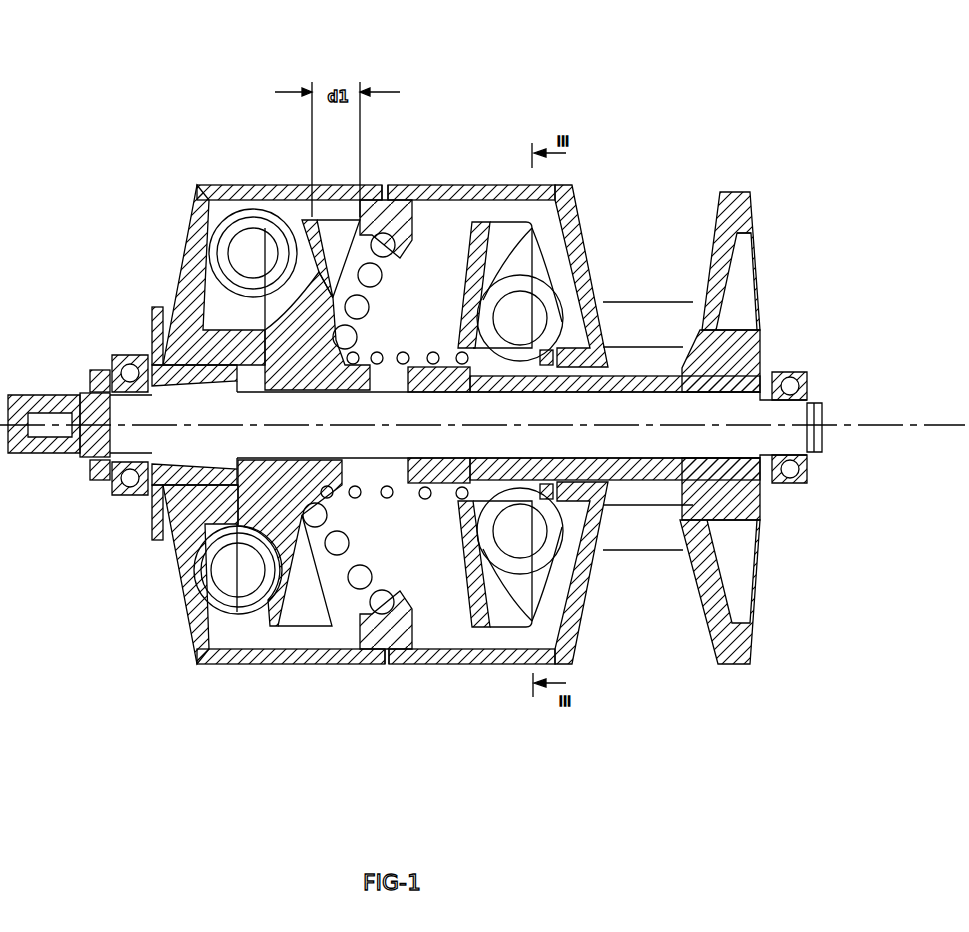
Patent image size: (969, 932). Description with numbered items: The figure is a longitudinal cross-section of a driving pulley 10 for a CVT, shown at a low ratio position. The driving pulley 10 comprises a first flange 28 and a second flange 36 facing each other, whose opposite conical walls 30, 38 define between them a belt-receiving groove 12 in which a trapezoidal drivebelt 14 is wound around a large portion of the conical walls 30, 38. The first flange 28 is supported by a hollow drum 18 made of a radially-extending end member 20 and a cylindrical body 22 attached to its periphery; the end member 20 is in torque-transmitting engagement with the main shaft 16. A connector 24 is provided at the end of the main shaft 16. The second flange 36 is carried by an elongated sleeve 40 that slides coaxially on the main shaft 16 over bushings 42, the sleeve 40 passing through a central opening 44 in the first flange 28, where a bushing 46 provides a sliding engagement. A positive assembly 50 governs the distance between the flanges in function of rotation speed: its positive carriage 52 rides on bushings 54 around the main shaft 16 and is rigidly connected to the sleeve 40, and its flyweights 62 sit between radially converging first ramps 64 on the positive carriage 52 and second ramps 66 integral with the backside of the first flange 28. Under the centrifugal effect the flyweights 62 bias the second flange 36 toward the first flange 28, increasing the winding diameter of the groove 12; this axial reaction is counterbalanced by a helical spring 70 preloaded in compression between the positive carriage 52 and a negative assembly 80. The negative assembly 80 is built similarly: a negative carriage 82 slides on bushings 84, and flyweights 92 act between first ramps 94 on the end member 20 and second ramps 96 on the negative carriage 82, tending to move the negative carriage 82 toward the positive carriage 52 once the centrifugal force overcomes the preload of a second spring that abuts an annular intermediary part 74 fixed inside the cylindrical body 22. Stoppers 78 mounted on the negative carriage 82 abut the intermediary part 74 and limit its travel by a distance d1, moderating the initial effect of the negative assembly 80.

The driving pulley 10 is at (85, 50).
The belt-receiving groove 12 is at (643, 287).
The trapezoidal drivebelt 14 is at (675, 333).
The main shaft 16 is at (760, 448).
The hollow drum 18 is at (133, 120).
The end member 20 is at (180, 240).
The cylindrical body 22 is at (203, 207).
The connector 24 is at (70, 462).
The first flange 28 is at (570, 188).
The conical wall 30 is at (588, 262).
The second flange 36 is at (752, 218).
The conical wall 38 is at (705, 238).
The sleeve 40 is at (660, 480).
The bushings 42 is at (717, 458).
The opening 44 is at (640, 578).
The bushing 46 is at (600, 457).
The positive assembly 50 is at (573, 742).
The positive carriage 52 is at (421, 497).
The bushings 54 is at (455, 457).
The flyweights 62 is at (522, 535).
The first ramps 64 is at (568, 652).
The second ramps 66 is at (540, 597).
The spring 70 is at (418, 350).
The intermediary part 74 is at (422, 186).
The stoppers 78 is at (331, 228).
The negative assembly 80 is at (348, 738).
The negative carriage 82 is at (197, 665).
The bushings 84 is at (300, 455).
The flyweights 92 is at (212, 583).
The first ramps 94 is at (215, 625).
The second ramps 96 is at (295, 227).